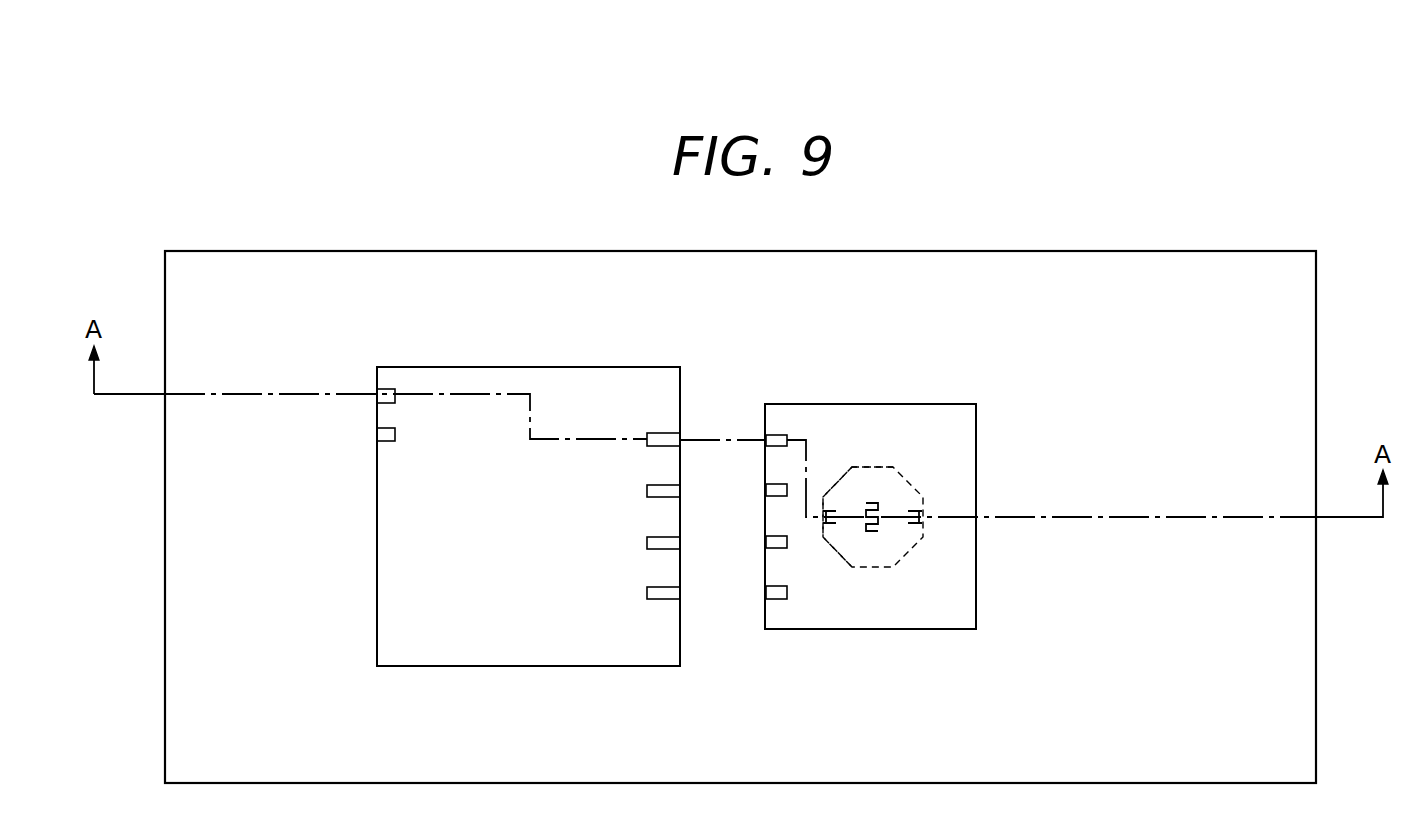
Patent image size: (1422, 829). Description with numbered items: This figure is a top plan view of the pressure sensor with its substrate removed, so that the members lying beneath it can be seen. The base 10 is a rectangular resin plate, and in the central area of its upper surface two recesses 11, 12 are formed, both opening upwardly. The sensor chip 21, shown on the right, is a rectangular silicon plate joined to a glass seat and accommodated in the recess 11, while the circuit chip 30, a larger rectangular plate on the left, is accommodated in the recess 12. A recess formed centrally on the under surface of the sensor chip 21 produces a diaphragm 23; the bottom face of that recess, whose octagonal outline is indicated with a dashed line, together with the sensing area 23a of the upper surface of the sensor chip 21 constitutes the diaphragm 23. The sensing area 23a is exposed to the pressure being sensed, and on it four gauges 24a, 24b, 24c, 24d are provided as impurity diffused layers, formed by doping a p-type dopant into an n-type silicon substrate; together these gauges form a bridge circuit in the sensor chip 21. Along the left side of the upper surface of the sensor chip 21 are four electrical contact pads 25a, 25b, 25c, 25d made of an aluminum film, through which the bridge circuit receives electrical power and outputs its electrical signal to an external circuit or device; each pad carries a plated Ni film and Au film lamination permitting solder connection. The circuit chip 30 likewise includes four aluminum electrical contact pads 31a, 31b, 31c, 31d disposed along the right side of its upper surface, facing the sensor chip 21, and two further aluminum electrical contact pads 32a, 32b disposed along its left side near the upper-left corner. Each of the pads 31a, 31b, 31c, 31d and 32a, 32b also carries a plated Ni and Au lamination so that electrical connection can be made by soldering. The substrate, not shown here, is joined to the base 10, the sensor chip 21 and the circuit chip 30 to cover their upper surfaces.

The base 10 is at (1317, 720).
The recess 11 is at (977, 545).
The recess 12 is at (680, 626).
The sensor chip 21 is at (976, 428).
The diaphragm 23 is at (908, 548).
The sensing area 23a is at (868, 541).
The gauge 24a is at (827, 511).
The gauge 24b is at (872, 503).
The gauge 24c is at (915, 511).
The gauge 24d is at (872, 532).
The electrical contact pad 25a is at (780, 435).
The electrical contact pad 25b is at (766, 486).
The electrical contact pad 25c is at (766, 537).
The electrical contact pad 25d is at (767, 598).
The circuit chip 30 is at (651, 367).
The electrical contact pad 31a is at (663, 432).
The electrical contact pad 31b is at (665, 485).
The electrical contact pad 31c is at (665, 538).
The electrical contact pad 31d is at (665, 588).
The electrical contact pad 32a is at (393, 389).
The electrical contact pad 32b is at (386, 442).